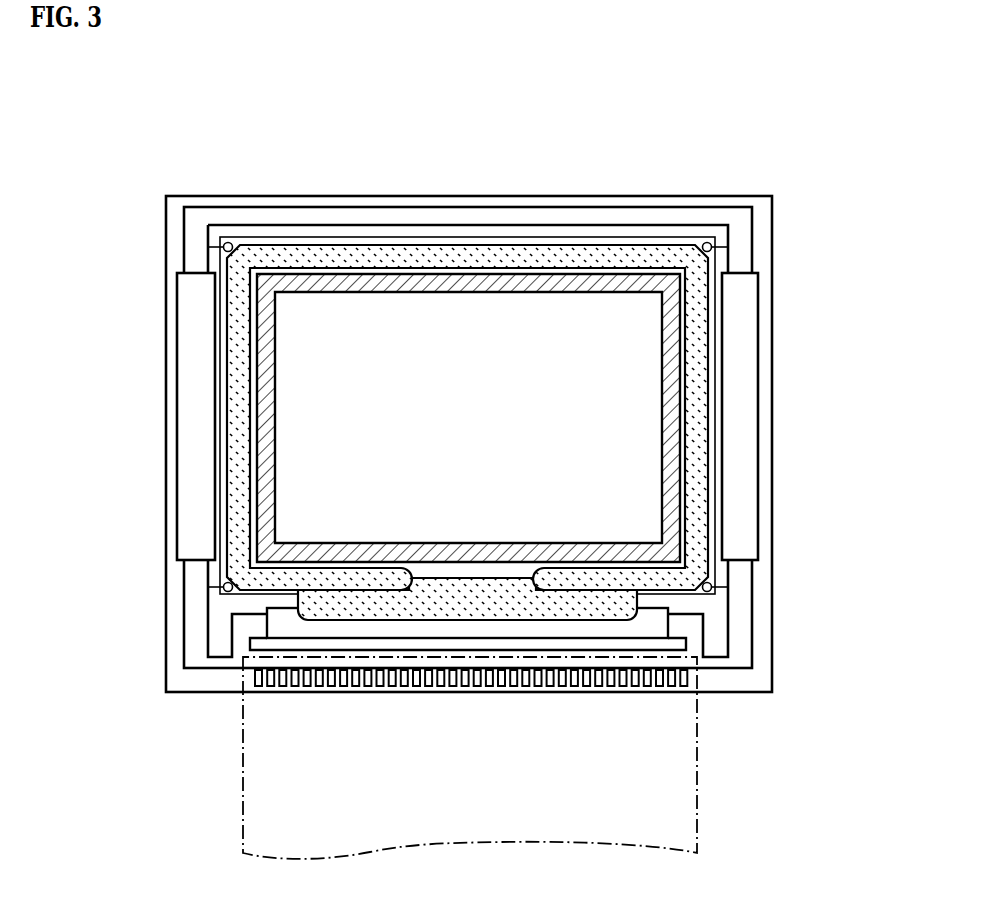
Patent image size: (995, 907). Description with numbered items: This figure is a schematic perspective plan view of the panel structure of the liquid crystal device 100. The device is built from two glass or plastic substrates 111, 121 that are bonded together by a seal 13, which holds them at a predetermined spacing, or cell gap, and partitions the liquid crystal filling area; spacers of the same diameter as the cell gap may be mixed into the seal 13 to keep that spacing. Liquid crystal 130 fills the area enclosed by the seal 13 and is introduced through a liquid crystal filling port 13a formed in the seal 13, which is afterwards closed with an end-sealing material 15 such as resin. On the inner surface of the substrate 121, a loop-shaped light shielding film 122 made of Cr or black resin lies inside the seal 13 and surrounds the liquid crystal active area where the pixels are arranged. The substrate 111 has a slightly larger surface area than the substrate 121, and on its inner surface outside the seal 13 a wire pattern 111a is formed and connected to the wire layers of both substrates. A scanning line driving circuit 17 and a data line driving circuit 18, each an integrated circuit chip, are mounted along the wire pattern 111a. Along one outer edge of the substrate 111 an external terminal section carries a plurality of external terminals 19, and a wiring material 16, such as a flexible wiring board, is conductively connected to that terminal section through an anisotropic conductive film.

The liquid crystal device 100 is at (500, 137).
The substrate 111 is at (223, 196).
The wire pattern 111a is at (695, 207).
The seal 13 is at (313, 245).
The liquid crystal filling port 13a is at (415, 574).
The substrate 121 is at (517, 238).
The light shielding film 122 is at (275, 407).
The liquid crystal 130 is at (585, 375).
The end-sealing material 15 is at (478, 580).
The scanning line driving circuit 17 is at (177, 430).
The data line driving circuit 18 is at (298, 650).
The external terminals 19 is at (387, 690).
The wiring material 16 is at (697, 733).